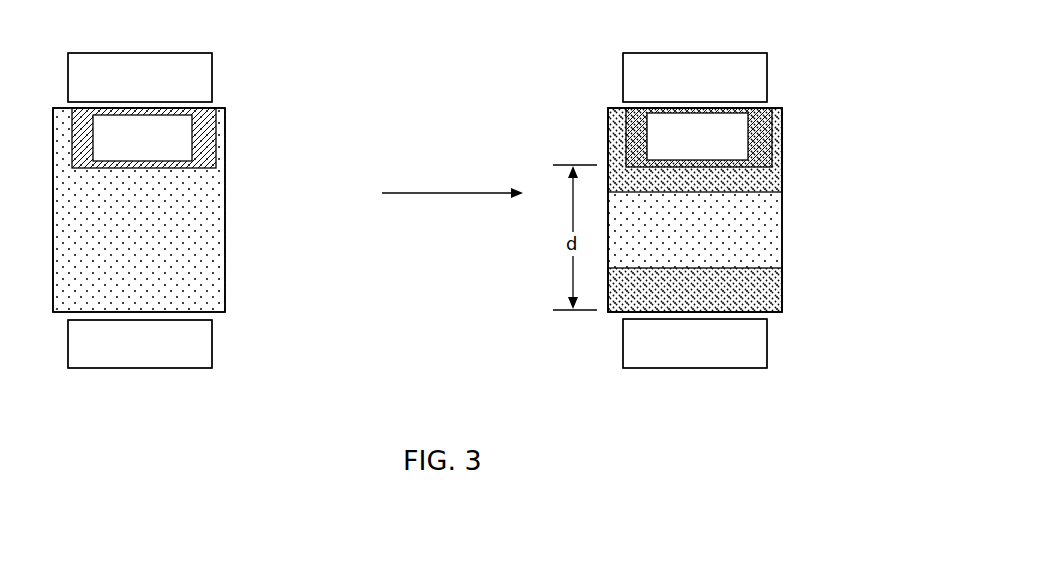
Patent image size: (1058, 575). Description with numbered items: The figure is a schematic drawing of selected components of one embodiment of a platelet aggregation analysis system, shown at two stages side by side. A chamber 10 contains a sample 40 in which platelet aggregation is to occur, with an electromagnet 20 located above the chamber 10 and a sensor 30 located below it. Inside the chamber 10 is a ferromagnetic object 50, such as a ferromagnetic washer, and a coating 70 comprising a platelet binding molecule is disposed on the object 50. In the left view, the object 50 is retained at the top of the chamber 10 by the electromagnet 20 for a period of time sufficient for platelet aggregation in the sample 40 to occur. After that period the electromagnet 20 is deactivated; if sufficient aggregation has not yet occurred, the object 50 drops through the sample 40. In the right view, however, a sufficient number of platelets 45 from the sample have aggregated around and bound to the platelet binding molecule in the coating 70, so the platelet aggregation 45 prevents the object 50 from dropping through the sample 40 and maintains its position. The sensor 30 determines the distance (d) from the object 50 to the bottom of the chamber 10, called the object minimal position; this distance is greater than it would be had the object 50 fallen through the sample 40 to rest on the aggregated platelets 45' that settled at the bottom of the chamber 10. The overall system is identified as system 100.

The electrochemical cell 100 is at (256, 63).
The chamber 10 is at (228, 265).
The electromagnet 20 is at (153, 90).
The sensor 30 is at (153, 356).
The sample 40 is at (190, 202).
The platelets 45 is at (740, 146).
The aggregated platelets 45' is at (744, 310).
The ferromagnetic object 50 is at (156, 150).
The coating 70 is at (211, 139).